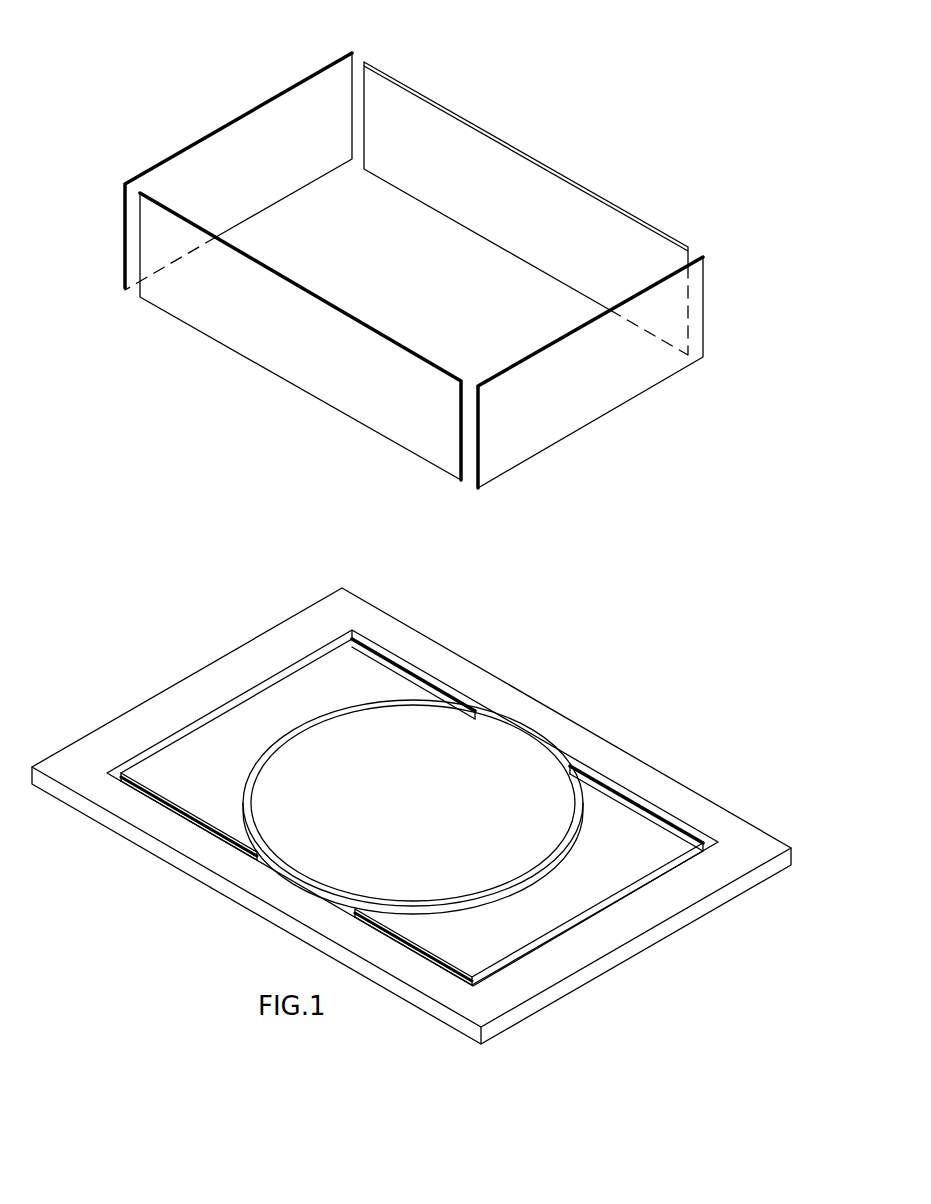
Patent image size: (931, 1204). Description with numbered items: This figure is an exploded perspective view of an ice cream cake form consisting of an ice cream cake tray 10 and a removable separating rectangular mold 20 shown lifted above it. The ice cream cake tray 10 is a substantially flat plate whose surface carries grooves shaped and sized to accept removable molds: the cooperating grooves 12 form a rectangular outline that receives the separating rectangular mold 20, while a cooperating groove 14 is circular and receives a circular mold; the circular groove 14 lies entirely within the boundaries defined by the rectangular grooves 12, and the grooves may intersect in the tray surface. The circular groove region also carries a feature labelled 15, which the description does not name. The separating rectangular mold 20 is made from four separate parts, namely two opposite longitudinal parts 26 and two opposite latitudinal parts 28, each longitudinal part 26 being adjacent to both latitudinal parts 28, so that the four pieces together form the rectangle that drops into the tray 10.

The ice cream cake tray 10 is at (733, 827).
The cooperating grooves 12 is at (618, 885).
The cooperating groove 14 is at (377, 703).
The ring flange 15 is at (540, 747).
The separating rectangular mold 20 is at (423, 256).
The longitudinal parts 26 is at (587, 187).
The latitudinal parts 28 is at (232, 113).